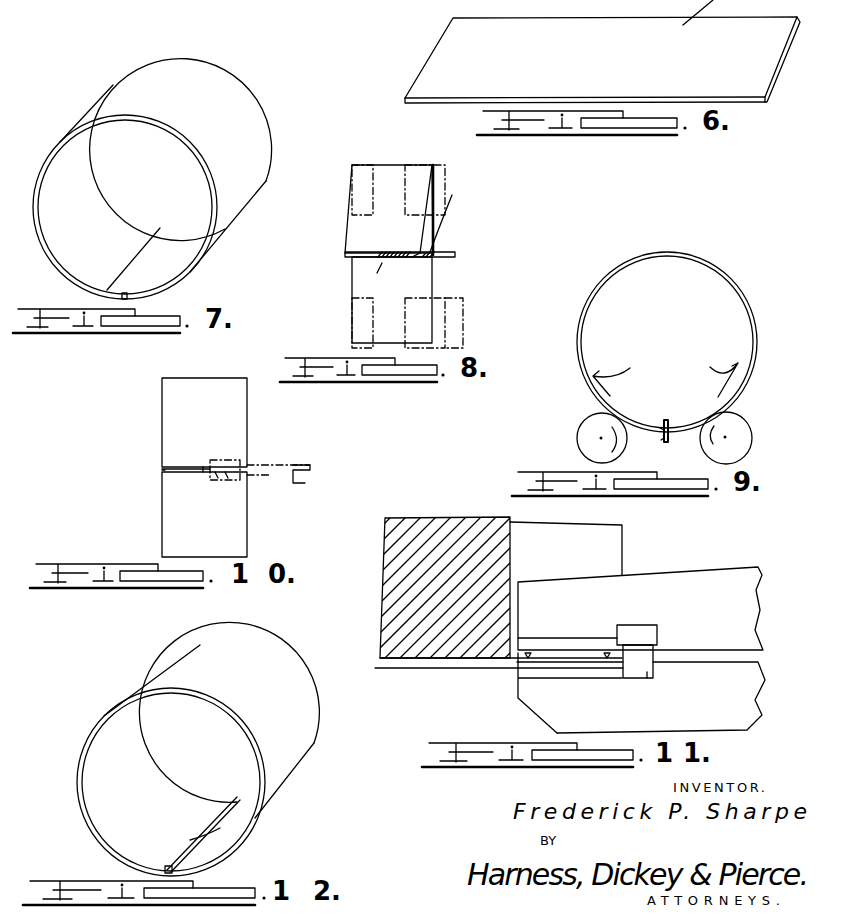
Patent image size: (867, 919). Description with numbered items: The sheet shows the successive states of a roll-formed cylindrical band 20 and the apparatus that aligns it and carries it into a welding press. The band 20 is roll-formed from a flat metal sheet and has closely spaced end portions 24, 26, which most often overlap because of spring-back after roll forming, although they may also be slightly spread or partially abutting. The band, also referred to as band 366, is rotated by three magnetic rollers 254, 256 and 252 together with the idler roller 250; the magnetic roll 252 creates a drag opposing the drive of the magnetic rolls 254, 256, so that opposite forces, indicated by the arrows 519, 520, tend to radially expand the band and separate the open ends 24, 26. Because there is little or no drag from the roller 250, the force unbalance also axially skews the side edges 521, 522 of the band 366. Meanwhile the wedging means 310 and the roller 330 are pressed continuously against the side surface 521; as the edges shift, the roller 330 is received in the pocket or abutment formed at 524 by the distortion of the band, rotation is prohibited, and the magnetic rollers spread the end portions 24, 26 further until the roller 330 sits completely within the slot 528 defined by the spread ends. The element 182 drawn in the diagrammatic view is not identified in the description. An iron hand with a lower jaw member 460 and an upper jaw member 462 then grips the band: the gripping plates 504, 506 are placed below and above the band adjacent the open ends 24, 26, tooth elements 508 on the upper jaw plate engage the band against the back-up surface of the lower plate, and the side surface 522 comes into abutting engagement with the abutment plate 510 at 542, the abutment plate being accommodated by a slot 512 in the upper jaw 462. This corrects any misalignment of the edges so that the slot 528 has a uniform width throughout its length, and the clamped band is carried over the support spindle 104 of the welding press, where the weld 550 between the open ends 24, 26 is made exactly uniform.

In FIG. 7, the cylindrical band 20 is at (240, 115).
In FIG. 12, the cylindrical band 20 is at (287, 745).
In FIG. 7, the end portion 24 is at (133, 258).
In FIG. 8, the end portion 24 is at (378, 252).
In FIG. 9, the end portion 24 is at (663, 425).
In FIG. 10, the end portion 24 is at (170, 467).
In FIG. 12, the end portion 24 is at (207, 823).
In FIG. 7, the end portion 26 is at (163, 296).
In FIG. 8, the end portion 26 is at (433, 258).
In FIG. 9, the end portion 26 is at (663, 435).
In FIG. 10, the end portion 26 is at (170, 478).
In FIG. 12, the end portion 26 is at (218, 823).
In FIG. 11, the welding press support spindle 104 is at (423, 522).
In FIG. 8, the lower block 182 is at (393, 279).
In FIG. 8, the idler roller 250 is at (442, 160).
In FIG. 8, the idler roller 252 is at (380, 142).
In FIG. 9, the idler roller 252 is at (578, 423).
In FIG. 8, the magnetic roller 254 is at (348, 350).
In FIG. 9, the magnetic roller 254 is at (748, 422).
In FIG. 8, the magnetic roller 256 is at (448, 330).
In FIG. 8, the wedging means 310 is at (452, 252).
In FIG. 8, the roller 330 is at (436, 247).
In FIG. 9, the roller 330 is at (668, 437).
In FIG. 8, the band 366 is at (358, 282).
In FIG. 11, the lower jaw member 460 is at (750, 680).
In FIG. 10, the upper jaw member 462 is at (307, 483).
In FIG. 11, the upper jaw member 462 is at (702, 575).
In FIG. 11, the gripping plate 504 is at (562, 673).
In FIG. 10, the gripping plate 506 is at (227, 460).
In FIG. 11, the gripping plate 506 is at (577, 650).
In FIG. 10, the tooth elements 508 is at (220, 480).
In FIG. 11, the tooth elements 508 is at (530, 653).
In FIG. 11, the abutment plate 510 is at (647, 672).
In FIG. 11, the slot 512 is at (663, 642).
In FIG. 9, the force arrow 519 is at (620, 368).
In FIG. 9, the force arrow 520 is at (710, 368).
In FIG. 8, the side surface 521 is at (435, 318).
In FIG. 8, the side edge 522 is at (345, 225).
In FIG. 11, the side edge 522 is at (632, 542).
In FIG. 8, the pocket or abutment 524 is at (433, 257).
In FIG. 8, the slot 528 is at (430, 213).
In FIG. 10, the slot 528 is at (203, 475).
In FIG. 11, the abutting engagement point 542 is at (637, 647).
In FIG. 12, the weld 550 is at (190, 840).